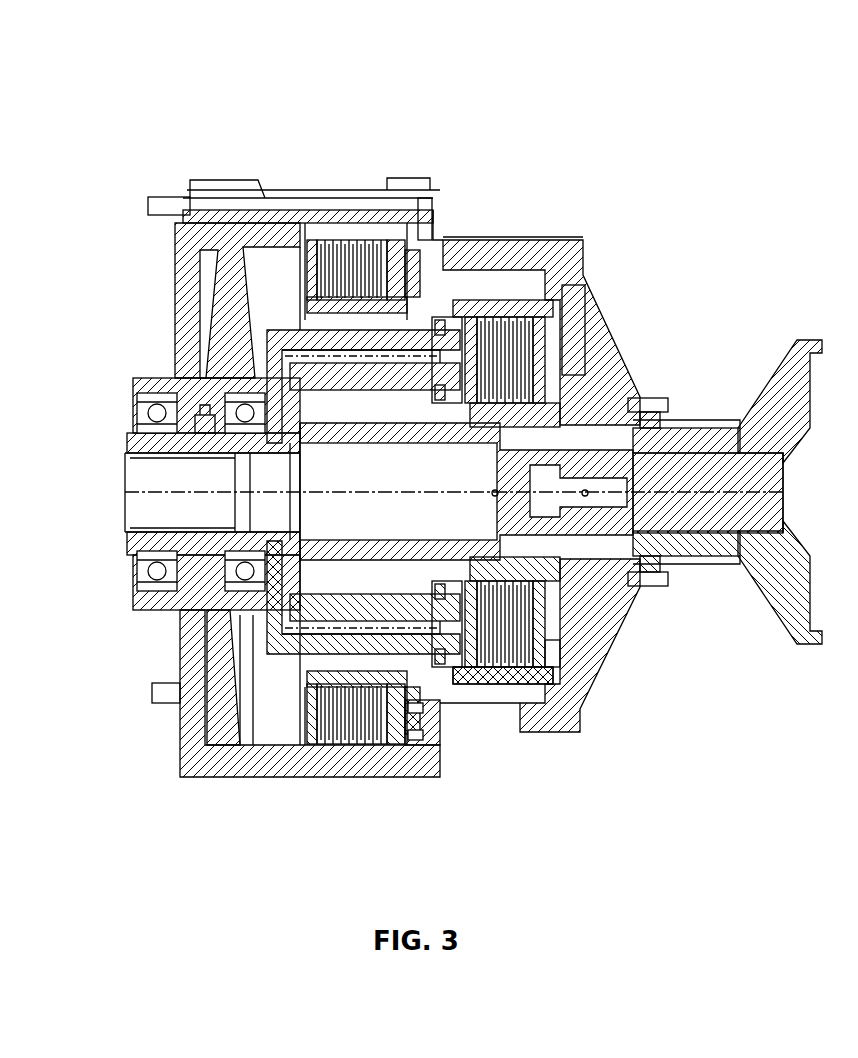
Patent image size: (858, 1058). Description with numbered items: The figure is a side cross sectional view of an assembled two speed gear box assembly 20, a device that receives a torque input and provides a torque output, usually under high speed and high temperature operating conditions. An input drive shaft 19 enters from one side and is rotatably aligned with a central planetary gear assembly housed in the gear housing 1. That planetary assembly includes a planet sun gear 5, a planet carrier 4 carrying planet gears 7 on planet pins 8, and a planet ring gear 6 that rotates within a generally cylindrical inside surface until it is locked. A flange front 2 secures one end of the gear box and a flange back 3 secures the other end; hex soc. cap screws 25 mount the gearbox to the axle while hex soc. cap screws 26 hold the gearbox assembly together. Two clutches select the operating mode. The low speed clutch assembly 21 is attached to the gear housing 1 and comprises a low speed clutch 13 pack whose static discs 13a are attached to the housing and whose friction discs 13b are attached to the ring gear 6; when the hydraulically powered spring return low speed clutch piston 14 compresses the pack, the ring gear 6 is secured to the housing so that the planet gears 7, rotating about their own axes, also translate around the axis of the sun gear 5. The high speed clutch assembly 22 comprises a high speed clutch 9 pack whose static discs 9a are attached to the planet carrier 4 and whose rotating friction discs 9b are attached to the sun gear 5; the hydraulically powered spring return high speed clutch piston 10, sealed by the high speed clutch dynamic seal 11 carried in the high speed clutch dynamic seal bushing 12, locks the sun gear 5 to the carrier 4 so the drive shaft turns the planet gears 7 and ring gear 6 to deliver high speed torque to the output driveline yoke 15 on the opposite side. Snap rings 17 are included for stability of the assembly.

The gear housing 1 is at (342, 245).
The flange front 2 is at (573, 250).
The flange back 3 is at (193, 373).
The planet carrier 4 is at (317, 363).
The planet sun gear 5 is at (635, 483).
The planet ring gear 6 is at (382, 305).
The planet gears 7 is at (338, 653).
The planet pins 8 is at (307, 607).
The high speed clutch 9 is at (497, 317).
The static discs 9a is at (510, 318).
The rotating friction discs 9b is at (525, 320).
The high speed clutch piston 10 is at (460, 400).
The high speed clutch dynamic seal 11 is at (203, 573).
The high speed clutch dynamic seal bushing 12 is at (212, 417).
The low speed clutch 13 is at (368, 700).
The static discs 13a is at (357, 245).
The friction discs 13b is at (373, 245).
The low speed clutch piston 14 is at (428, 747).
The driveline yoke 15 is at (733, 420).
The snap ring 17 is at (558, 657).
The drive shaft 19 is at (145, 468).
The two speed gear box assembly 20 is at (108, 490).
The low speed clutch assembly 21 is at (343, 796).
The high speed clutch assembly 22 is at (513, 765).
The hex soc. cap screws 25 is at (570, 290).
The hex soc. cap screws 26 is at (663, 407).